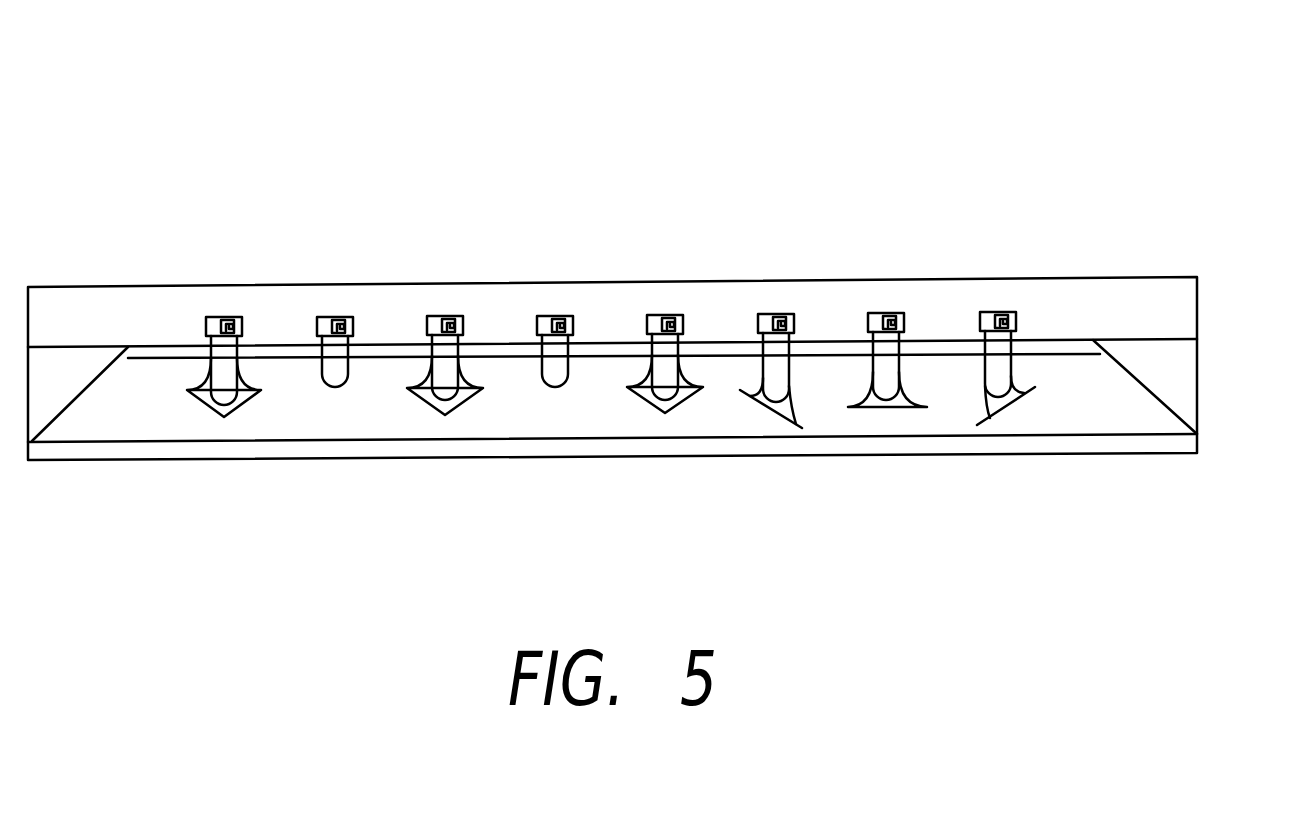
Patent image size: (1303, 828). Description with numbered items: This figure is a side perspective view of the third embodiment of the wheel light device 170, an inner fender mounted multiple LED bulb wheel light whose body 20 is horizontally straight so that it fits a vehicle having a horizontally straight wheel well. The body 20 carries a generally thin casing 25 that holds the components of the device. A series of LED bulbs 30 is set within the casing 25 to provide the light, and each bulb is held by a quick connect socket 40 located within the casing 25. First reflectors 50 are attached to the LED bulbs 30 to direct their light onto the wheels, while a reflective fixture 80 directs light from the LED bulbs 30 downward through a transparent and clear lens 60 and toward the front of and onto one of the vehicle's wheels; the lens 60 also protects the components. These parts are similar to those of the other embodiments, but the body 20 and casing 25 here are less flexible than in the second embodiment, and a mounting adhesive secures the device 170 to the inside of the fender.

The wheel light device 170 is at (1082, 233).
The body 20 is at (301, 279).
The generally thin casing 25 is at (1072, 356).
The LED bulbs 30 is at (540, 370).
The quick connect socket 40 is at (775, 315).
The first reflector 50 is at (1007, 408).
The transparent and clear lens 60 is at (572, 452).
The reflective fixture 80 is at (1177, 412).